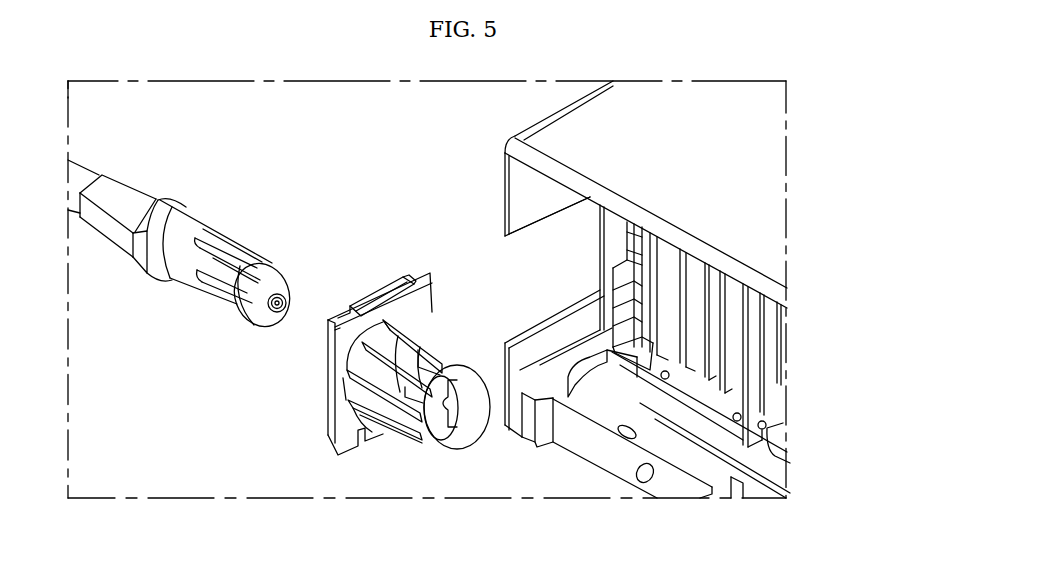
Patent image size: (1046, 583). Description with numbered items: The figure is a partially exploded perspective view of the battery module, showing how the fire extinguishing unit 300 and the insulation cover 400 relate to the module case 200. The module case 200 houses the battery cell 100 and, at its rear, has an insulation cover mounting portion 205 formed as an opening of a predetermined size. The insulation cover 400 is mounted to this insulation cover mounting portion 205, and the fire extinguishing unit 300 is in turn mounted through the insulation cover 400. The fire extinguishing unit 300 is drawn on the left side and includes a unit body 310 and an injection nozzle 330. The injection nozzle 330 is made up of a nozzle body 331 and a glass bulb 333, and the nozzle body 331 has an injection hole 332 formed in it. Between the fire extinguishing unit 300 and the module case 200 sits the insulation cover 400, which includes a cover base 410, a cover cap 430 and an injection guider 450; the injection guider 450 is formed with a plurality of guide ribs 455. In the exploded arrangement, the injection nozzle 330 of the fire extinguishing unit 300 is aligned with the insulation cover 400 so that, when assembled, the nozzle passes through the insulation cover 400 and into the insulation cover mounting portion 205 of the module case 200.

The battery cell 100 is at (779, 384).
The module case 200 is at (680, 194).
The insulation cover mounting portion 205 is at (548, 212).
The fire extinguishing unit 300 is at (183, 254).
The unit body 310 is at (122, 202).
The injection nozzle 330 is at (229, 269).
The nozzle body 331 is at (275, 316).
The injection hole 332 is at (209, 229).
The glass bulb 333 is at (226, 274).
The insulation cover 400 is at (375, 387).
The cover base 410 is at (327, 402).
The cover cap 430 is at (466, 342).
The injection guider 450 is at (416, 422).
The guide ribs 455 is at (395, 402).